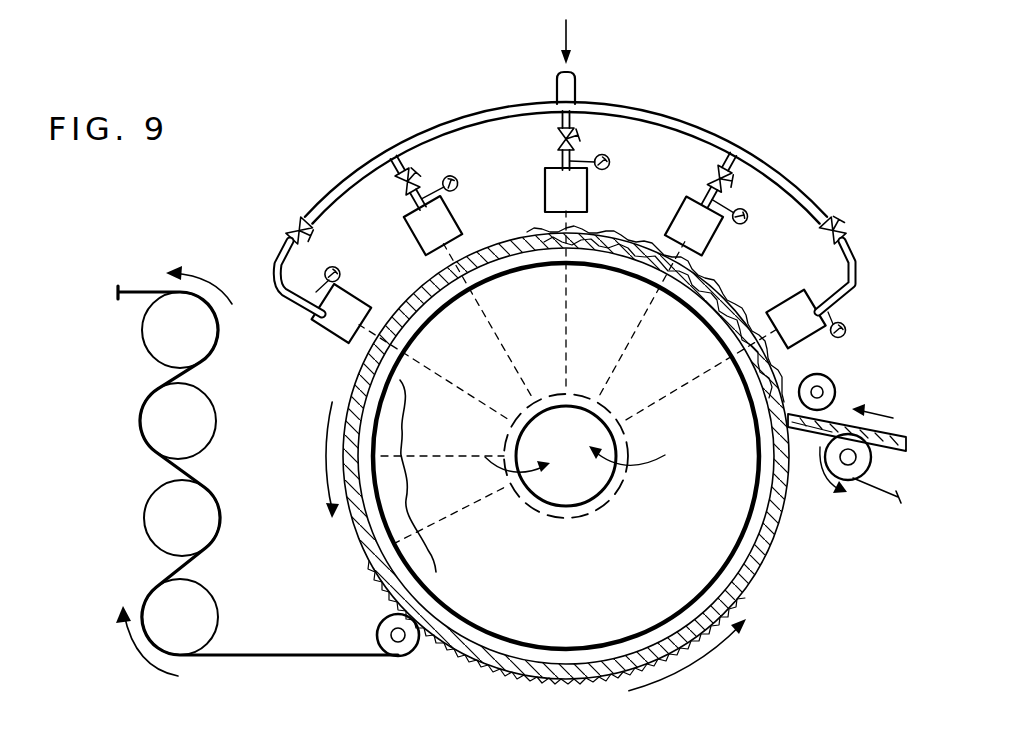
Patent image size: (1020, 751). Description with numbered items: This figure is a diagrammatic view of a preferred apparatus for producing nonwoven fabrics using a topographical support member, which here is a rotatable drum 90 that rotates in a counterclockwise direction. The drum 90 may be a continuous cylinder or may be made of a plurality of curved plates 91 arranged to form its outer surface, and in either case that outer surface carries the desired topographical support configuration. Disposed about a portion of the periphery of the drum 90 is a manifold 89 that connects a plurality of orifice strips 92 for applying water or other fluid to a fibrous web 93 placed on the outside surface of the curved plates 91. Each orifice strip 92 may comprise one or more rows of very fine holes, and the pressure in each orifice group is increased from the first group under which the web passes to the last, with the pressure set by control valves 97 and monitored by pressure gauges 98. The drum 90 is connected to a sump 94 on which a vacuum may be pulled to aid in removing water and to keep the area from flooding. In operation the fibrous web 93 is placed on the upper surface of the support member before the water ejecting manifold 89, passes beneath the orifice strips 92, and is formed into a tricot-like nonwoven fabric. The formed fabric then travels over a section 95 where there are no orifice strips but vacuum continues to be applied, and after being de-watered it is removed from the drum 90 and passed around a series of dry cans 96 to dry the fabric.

The manifold 89 is at (678, 122).
The rotatable drum 90 is at (575, 660).
The curved plates 91 is at (780, 492).
The orifice strips 92 is at (354, 296).
The fibrous web 93 is at (900, 433).
The sump 94 is at (577, 478).
The section 95 is at (422, 476).
The dry cans 96 is at (165, 515).
The control valves 97 is at (303, 222).
The pressure gauges 98 is at (333, 267).